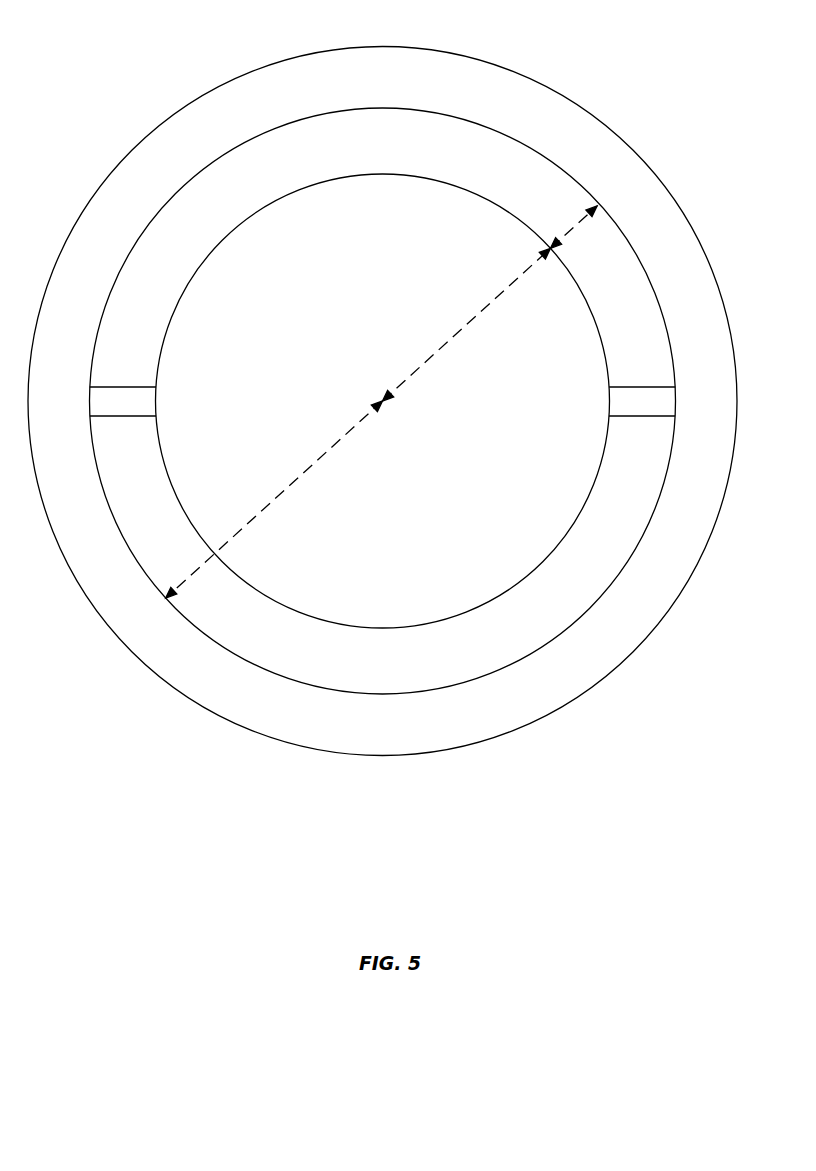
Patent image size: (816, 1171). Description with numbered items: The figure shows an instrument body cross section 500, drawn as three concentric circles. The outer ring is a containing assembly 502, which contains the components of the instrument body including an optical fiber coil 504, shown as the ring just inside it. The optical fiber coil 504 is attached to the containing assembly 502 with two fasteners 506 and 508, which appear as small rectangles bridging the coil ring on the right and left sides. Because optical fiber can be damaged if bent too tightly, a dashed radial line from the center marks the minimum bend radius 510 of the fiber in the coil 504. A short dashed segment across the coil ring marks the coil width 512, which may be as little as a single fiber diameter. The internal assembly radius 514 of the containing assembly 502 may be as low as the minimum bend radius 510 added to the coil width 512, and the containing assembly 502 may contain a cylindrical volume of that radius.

The instrument body cross section 500 is at (382, 461).
The containing assembly 502 is at (372, 732).
The optical fiber coil 504 is at (372, 672).
The fastener 506 is at (598, 401).
The fastener 508 is at (168, 402).
The minimum bend radius 510 is at (458, 324).
The coil width 512 is at (577, 227).
The internal assembly radius 514 is at (274, 499).